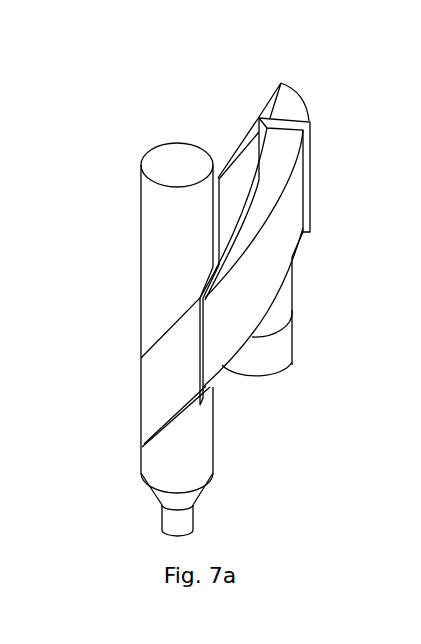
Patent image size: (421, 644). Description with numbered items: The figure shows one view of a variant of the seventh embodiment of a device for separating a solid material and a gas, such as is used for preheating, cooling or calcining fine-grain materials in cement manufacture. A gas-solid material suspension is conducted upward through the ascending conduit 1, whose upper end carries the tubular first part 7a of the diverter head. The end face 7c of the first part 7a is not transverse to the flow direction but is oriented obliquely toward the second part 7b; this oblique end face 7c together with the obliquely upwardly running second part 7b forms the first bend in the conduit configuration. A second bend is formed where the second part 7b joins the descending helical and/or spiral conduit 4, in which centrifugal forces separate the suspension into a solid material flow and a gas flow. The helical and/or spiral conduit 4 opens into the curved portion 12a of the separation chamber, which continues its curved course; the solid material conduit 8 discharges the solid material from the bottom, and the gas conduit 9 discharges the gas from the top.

The ascending conduit 1 is at (268, 352).
The helical and/or spiral conduit 4 is at (268, 267).
The first part 7a is at (280, 308).
The second part 7b is at (288, 105).
The end face 7c is at (248, 135).
The solid material conduit 8 is at (177, 514).
The gas conduit 9 is at (176, 160).
The curved portion 12a is at (168, 385).